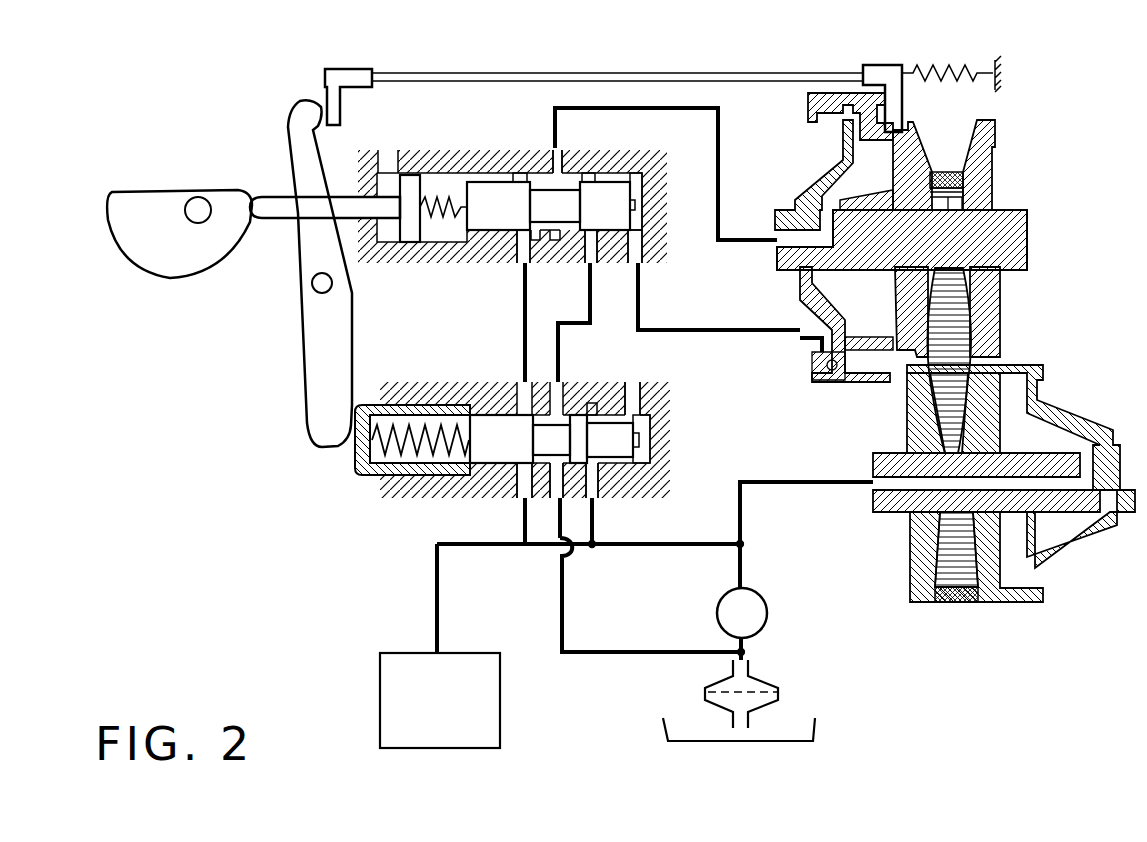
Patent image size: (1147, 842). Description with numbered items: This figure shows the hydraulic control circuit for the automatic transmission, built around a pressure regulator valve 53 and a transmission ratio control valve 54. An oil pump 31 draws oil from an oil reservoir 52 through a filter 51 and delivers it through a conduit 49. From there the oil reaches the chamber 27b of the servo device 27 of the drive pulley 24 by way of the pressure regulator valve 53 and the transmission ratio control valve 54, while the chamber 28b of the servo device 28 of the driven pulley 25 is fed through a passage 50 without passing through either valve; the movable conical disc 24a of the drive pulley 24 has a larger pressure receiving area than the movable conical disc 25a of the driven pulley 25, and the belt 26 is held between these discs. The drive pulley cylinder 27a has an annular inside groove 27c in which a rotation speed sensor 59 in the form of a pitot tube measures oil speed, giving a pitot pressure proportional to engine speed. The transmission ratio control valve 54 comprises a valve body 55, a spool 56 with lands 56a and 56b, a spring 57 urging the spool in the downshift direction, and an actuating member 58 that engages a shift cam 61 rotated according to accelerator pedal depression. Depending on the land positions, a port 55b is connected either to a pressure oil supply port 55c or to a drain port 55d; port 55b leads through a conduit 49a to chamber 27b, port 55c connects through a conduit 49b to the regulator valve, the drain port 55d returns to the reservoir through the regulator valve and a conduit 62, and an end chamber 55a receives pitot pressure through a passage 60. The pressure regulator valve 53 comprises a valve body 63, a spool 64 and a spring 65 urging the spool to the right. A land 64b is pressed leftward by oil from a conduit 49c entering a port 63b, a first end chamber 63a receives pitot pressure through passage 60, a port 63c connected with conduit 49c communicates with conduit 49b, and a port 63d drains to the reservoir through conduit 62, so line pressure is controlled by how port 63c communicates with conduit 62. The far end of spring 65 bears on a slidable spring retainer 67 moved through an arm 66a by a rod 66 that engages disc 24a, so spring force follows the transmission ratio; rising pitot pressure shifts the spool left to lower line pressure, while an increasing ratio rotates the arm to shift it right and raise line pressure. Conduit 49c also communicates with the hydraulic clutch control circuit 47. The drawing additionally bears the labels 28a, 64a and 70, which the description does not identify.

The drive pulley 24 is at (912, 224).
The movable conical disc 24a is at (912, 122).
The driven pulley 25 is at (969, 501).
The movable conical disc 25a is at (988, 600).
The belt 26 is at (946, 172).
The servo device 27 is at (822, 251).
The drive pulley cylinder 27a is at (832, 95).
The chamber 27b is at (835, 182).
The annular inside groove 27c is at (794, 377).
The servo device 28 is at (1023, 427).
The diaphragm spring outer portion 28a is at (1075, 548).
The chamber 28b is at (1068, 420).
The oil pump 31 is at (766, 615).
The hydraulic clutch control circuit 47 is at (378, 698).
The conduit 49 is at (664, 548).
The conduit 49a is at (722, 140).
The conduit 49b is at (522, 350).
The conduit 49c is at (596, 550).
The passage 50 is at (803, 484).
The filter 51 is at (768, 676).
The oil reservoir 52 is at (822, 732).
The pressure regulator valve 53 is at (530, 457).
The transmission ratio control valve 54 is at (532, 210).
The valve body 55 is at (462, 150).
The end chamber 55a is at (640, 258).
The port 55b is at (565, 168).
The pressure oil supply port 55c is at (512, 258).
The drain port 55d is at (577, 262).
The spool 56 is at (568, 208).
The land 56a is at (503, 182).
The land 56b is at (618, 186).
The spring 57 is at (420, 244).
The actuating member 58 is at (266, 195).
The rotation speed sensor 59 is at (830, 370).
The passage 60 is at (750, 330).
The shift cam 61 is at (178, 192).
The conduit 62 is at (600, 655).
The valve body 63 is at (396, 392).
The first end chamber 63a is at (655, 392).
The port 63b is at (596, 498).
The port 63c is at (520, 500).
The port 63d is at (556, 545).
The spool 64 is at (535, 429).
The spool land 64a is at (482, 466).
The land 64b is at (578, 410).
The spring 65 is at (442, 408).
The rod 66 is at (665, 73).
The arm 66a is at (335, 345).
The slidable spring retainer 67 is at (362, 478).
The signal line 70 is at (436, 598).